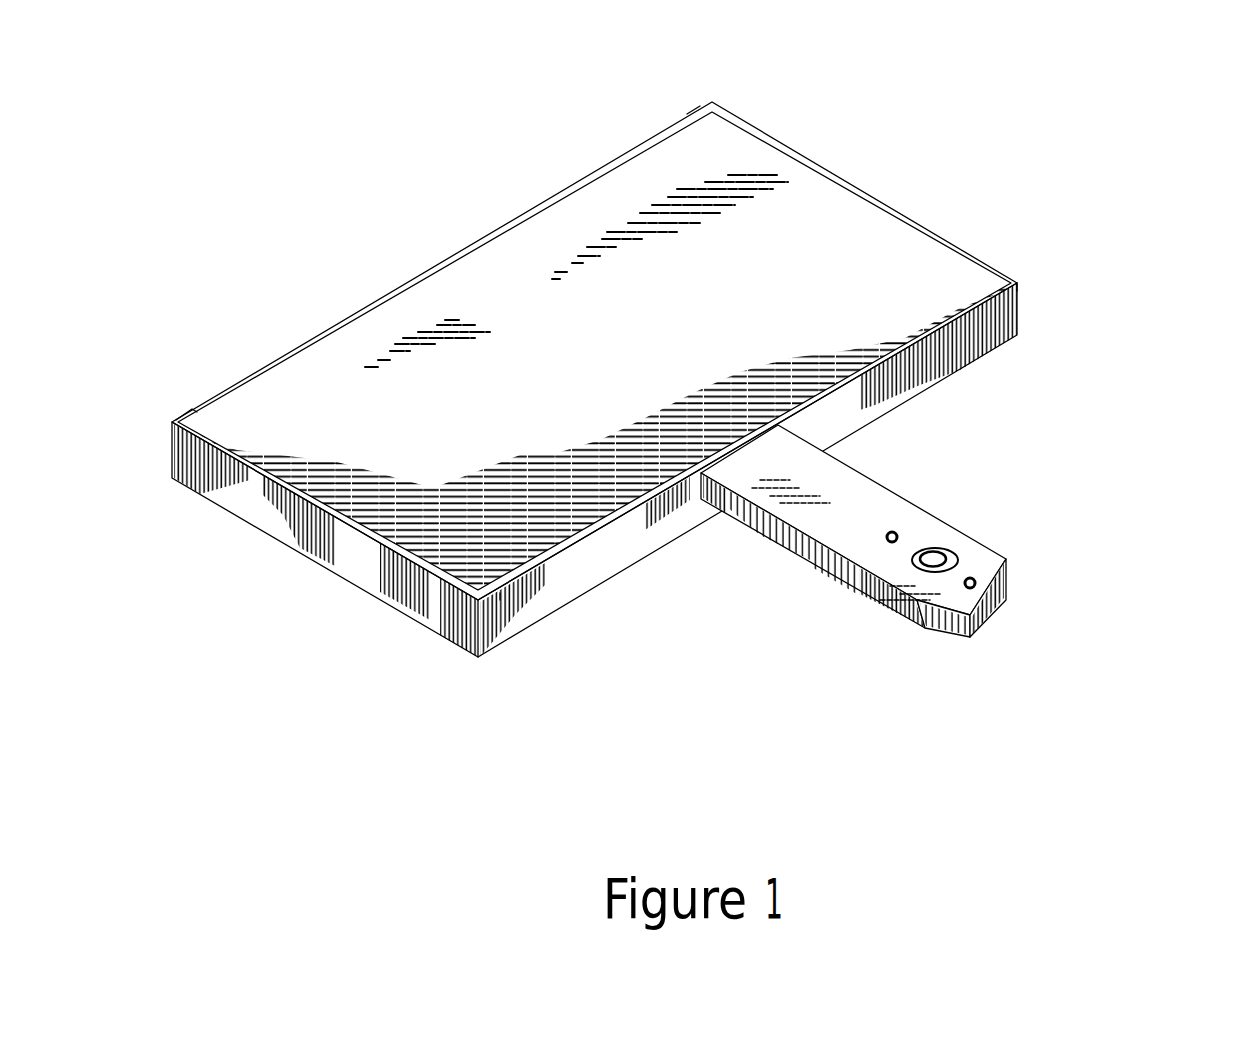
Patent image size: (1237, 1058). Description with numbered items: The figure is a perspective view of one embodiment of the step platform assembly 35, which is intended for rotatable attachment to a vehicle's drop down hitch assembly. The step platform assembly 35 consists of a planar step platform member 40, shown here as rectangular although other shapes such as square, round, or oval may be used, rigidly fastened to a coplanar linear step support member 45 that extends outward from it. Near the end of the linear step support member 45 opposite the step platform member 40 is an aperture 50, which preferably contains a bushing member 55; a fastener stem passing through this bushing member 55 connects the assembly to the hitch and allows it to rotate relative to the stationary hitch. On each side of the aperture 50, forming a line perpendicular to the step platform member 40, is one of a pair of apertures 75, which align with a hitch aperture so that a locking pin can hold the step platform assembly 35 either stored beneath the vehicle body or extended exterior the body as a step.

The step platform assembly 35 is at (1035, 105).
The planar step platform member 40 is at (492, 317).
The linear step support member 45 is at (793, 503).
The aperture 50 is at (946, 550).
The bushing member 55 is at (914, 556).
The apertures 75 is at (893, 532).